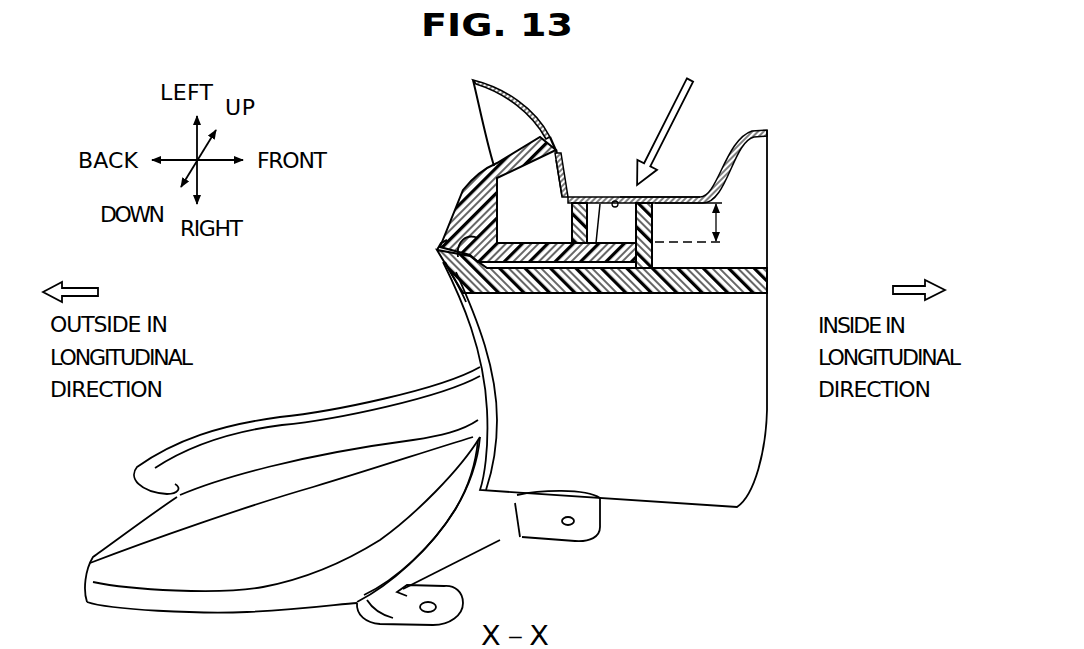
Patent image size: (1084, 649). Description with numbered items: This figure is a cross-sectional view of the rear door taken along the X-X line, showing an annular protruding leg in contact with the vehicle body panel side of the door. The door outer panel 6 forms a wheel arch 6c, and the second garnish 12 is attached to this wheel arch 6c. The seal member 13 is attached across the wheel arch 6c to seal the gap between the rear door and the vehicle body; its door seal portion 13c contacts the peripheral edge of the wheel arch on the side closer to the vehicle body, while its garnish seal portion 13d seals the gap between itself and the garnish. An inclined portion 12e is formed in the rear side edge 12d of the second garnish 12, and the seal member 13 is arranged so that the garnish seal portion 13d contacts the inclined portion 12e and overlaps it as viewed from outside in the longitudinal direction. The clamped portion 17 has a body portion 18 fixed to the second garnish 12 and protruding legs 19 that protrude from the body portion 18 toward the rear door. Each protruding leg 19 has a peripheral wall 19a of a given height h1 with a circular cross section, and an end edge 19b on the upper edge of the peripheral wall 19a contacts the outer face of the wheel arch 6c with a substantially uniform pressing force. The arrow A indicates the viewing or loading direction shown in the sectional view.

The second garnish 12 is at (742, 412).
The rear side edge 12d is at (438, 290).
The inclined portion 12e is at (441, 243).
The seal member 13 is at (569, 116).
The door seal portion 13c is at (472, 82).
The garnish seal portion 13d is at (437, 250).
The clamped portion 17 is at (660, 222).
The body portion 18 is at (543, 262).
The door outer panel 6 is at (766, 131).
The wheel arch 6c is at (616, 200).
The protruding leg 19 is at (596, 205).
The peripheral wall 19a is at (645, 198).
The end edge 19b is at (573, 198).
The water entry direction A is at (665, 115).
The height h1 is at (706, 222).